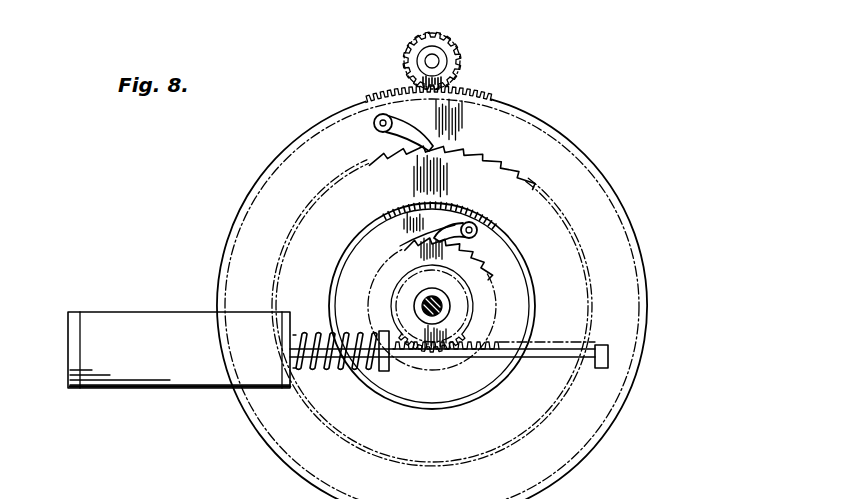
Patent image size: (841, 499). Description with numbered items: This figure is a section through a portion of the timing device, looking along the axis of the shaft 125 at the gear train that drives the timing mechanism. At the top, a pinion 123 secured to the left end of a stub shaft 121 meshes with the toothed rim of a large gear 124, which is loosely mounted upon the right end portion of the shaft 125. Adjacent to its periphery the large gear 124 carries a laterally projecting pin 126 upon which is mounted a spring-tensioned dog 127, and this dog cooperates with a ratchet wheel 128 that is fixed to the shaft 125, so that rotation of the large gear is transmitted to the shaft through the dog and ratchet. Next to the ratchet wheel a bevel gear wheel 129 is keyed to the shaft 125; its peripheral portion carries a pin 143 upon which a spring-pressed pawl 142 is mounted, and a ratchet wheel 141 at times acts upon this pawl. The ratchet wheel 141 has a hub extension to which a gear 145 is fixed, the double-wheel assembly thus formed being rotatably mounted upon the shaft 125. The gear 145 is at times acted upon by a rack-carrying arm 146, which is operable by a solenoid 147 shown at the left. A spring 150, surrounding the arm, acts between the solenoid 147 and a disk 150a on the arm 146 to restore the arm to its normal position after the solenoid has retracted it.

The stub shaft 121 is at (446, 56).
The pinion 123 is at (455, 77).
The large gear 124 is at (492, 98).
The shaft 125 is at (445, 303).
The laterally projecting pin 126 is at (386, 139).
The spring-tensioned dog 127 is at (374, 128).
The ratchet wheel 128 is at (505, 172).
The bevel gear wheel 129 is at (490, 226).
The ratchet wheel 141 is at (400, 246).
The spring-pressed pawl 142 is at (480, 231).
The pin 143 is at (488, 244).
The gear 145 is at (505, 328).
The rack-carrying arm 146 is at (449, 362).
The solenoid 147 is at (141, 312).
The spring 150 is at (318, 372).
The disk 150a is at (385, 392).